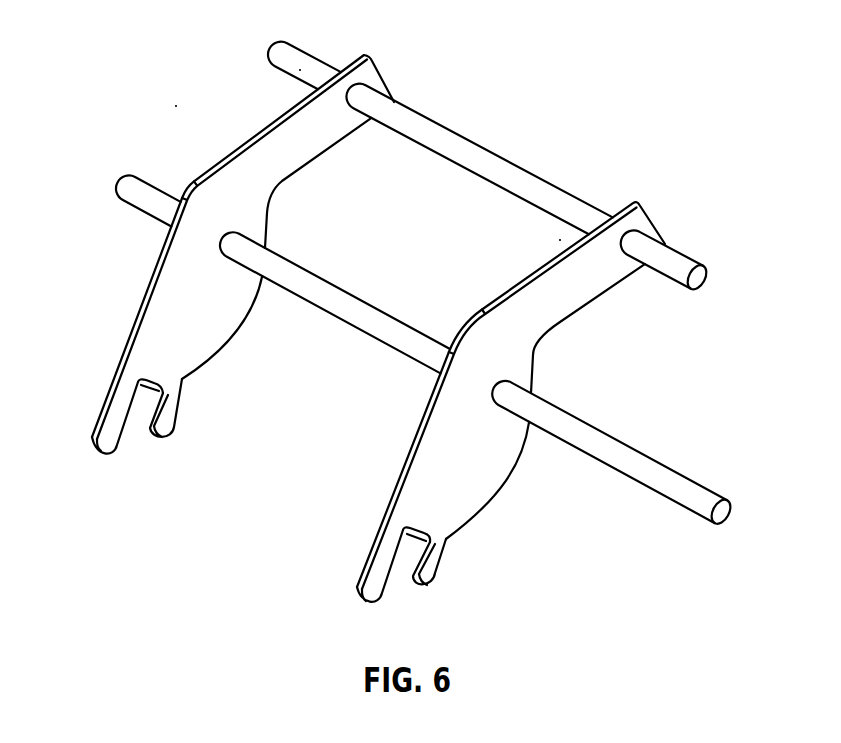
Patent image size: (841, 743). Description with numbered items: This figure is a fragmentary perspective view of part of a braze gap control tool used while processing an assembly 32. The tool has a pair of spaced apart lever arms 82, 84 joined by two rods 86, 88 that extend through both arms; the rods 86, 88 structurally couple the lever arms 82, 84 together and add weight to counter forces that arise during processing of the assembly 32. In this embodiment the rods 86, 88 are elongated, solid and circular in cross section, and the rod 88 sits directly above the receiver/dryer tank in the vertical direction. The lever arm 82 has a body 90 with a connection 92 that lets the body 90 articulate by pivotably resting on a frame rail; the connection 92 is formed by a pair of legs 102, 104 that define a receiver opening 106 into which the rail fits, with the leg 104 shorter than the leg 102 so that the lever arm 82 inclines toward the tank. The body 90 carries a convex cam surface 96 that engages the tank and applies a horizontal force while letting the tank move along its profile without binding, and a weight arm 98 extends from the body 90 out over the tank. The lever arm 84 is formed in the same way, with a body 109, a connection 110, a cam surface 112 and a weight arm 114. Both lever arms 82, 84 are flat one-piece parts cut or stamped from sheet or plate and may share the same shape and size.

The assembly 32 is at (175, 105).
The lever arm 82 is at (208, 312).
The lever arm 84 is at (475, 456).
The rod 86 is at (642, 463).
The rod 88 is at (673, 262).
The body 90 is at (182, 267).
The connection 92 is at (177, 387).
The cam surface 96 is at (243, 320).
The weight arm 98 is at (280, 145).
The leg 102 is at (103, 452).
The leg 104 is at (158, 433).
The receiver opening 106 is at (130, 408).
The body 109 is at (453, 407).
The connection 110 is at (437, 555).
The cam surface 112 is at (512, 466).
The weight arm 114 is at (577, 287).